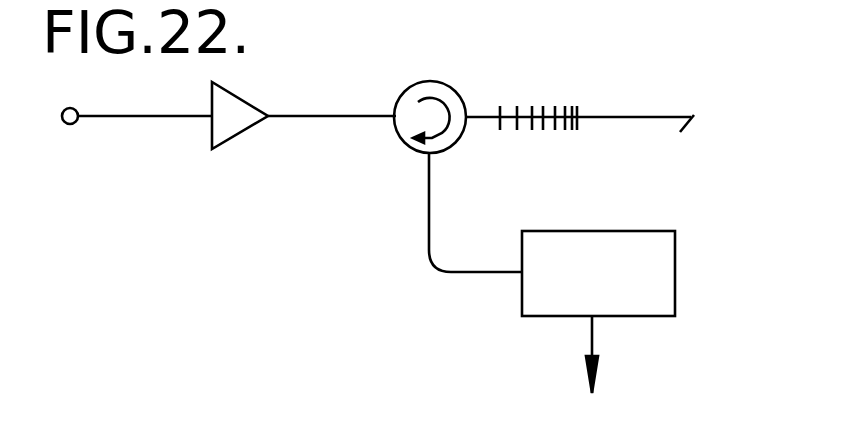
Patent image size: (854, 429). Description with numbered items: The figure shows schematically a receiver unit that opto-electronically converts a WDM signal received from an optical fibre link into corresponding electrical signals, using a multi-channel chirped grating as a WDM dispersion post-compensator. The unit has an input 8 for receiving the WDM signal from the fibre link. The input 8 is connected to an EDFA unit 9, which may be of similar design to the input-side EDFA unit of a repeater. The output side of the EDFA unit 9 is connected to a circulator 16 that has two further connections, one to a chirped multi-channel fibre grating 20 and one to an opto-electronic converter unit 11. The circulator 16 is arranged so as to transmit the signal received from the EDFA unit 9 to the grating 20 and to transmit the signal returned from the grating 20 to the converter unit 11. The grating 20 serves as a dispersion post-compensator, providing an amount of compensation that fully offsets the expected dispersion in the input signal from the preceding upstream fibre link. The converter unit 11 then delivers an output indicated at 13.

The input 8 is at (70, 124).
The EDFA unit 9 is at (232, 140).
The circulator 16 is at (407, 88).
The chirped multi-channel fibre grating 20 is at (533, 108).
The opto-electronic converter unit 11 is at (675, 262).
The output signal 13 is at (592, 348).